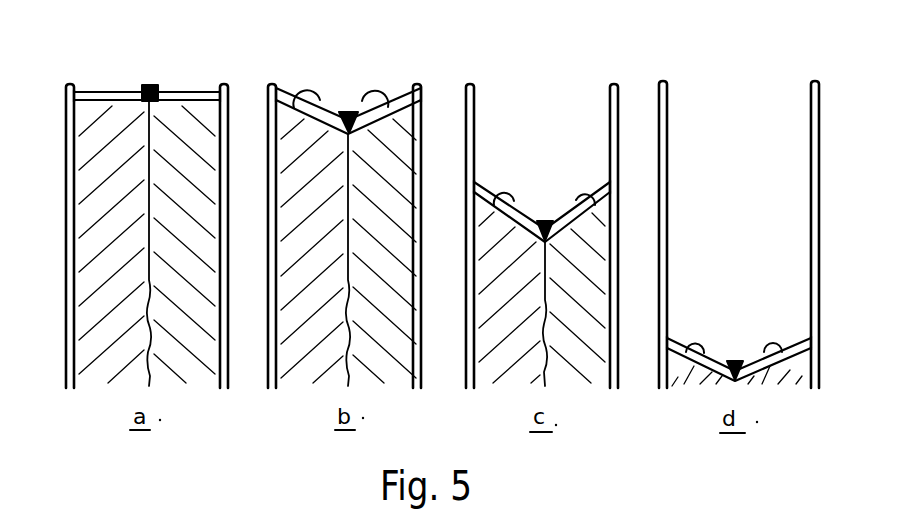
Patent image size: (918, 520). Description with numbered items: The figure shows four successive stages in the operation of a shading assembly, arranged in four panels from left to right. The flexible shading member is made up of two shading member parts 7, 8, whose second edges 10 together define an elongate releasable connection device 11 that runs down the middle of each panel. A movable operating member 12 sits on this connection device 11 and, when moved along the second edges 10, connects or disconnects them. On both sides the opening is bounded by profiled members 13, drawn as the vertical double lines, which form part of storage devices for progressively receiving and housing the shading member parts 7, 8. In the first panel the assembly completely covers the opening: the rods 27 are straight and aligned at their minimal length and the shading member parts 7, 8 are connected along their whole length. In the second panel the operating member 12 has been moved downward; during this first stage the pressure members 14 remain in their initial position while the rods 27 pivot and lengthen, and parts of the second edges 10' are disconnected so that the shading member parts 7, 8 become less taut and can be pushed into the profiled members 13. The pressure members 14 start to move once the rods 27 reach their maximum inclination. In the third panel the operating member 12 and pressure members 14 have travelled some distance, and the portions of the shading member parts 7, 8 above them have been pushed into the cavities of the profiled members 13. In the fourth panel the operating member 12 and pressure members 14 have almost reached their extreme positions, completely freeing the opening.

The shading member part 7 is at (782, 405).
The shading member part 8 is at (688, 410).
The second edge 10 is at (638, 242).
The parts of the second edges 10' is at (353, 77).
The releasable connection device 11 is at (545, 305).
The operating member 12 is at (739, 360).
The profiled member 13 is at (822, 95).
The pressure member 14 is at (812, 340).
The rod 27 is at (800, 347).